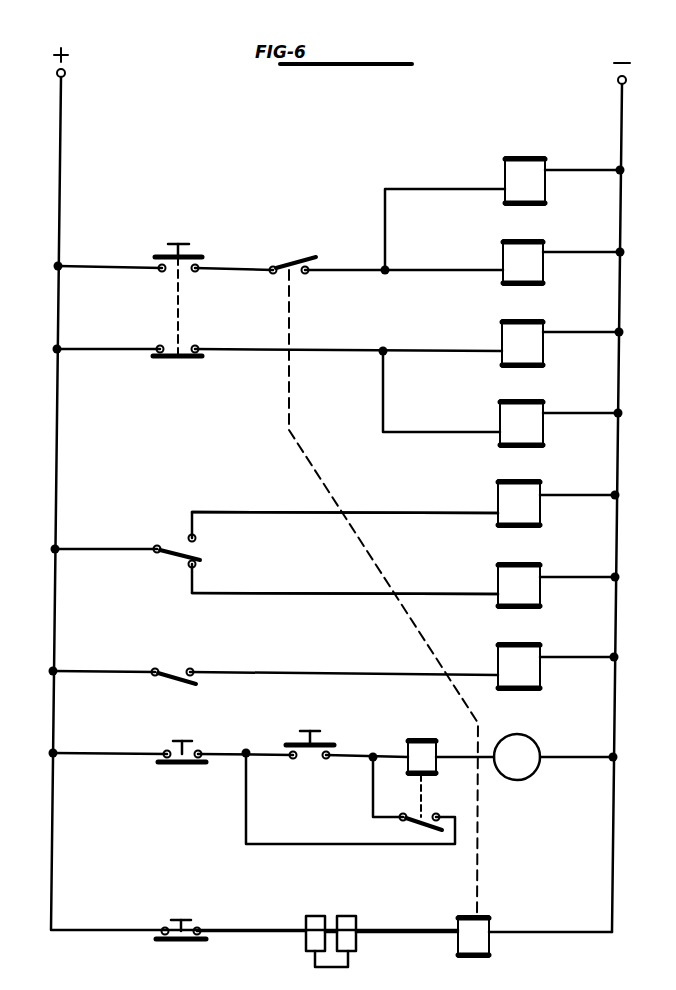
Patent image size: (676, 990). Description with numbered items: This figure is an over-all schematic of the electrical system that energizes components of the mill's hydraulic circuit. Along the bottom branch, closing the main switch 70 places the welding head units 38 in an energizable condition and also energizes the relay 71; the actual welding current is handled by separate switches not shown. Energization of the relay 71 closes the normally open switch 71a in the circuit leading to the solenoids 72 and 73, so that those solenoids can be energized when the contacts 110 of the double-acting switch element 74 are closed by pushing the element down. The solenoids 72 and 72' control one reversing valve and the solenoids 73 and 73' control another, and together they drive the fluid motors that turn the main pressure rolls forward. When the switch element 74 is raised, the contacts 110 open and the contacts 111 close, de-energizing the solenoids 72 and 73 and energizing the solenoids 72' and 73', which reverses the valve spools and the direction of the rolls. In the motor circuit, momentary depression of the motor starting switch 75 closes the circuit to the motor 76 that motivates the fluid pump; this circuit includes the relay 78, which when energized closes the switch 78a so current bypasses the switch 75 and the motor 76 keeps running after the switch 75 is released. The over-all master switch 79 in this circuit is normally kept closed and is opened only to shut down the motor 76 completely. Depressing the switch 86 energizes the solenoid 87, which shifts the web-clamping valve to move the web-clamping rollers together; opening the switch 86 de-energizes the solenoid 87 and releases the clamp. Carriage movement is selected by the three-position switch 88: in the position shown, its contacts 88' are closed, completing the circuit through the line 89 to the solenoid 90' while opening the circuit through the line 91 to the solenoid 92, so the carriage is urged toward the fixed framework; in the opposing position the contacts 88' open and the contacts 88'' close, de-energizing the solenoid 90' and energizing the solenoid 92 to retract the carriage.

The solenoid 73 is at (541, 180).
The solenoid 72 is at (541, 262).
The solenoid 73' is at (537, 343).
The solenoid 72' is at (535, 423).
The solenoid 92 is at (504, 498).
The solenoid 90' is at (536, 585).
The solenoid 87 is at (505, 656).
The contacts 110 is at (167, 273).
The contacts 111 is at (195, 345).
The double-acting switch element 74 is at (181, 321).
The normally open switch 71a is at (293, 264).
The relay 71 is at (485, 914).
The three-position switch 88 is at (173, 533).
The contacts 88' is at (164, 575).
The contacts 88'' is at (219, 541).
The line 91 is at (244, 507).
The line 89 is at (297, 590).
The switch 86 is at (177, 666).
The master switch 79 is at (170, 768).
The motor starting switch 75 is at (320, 740).
The relay 78 is at (422, 746).
The switch 78a is at (404, 827).
The motor 76 is at (524, 780).
The switch 70 is at (198, 924).
The welding head units 38 is at (303, 916).